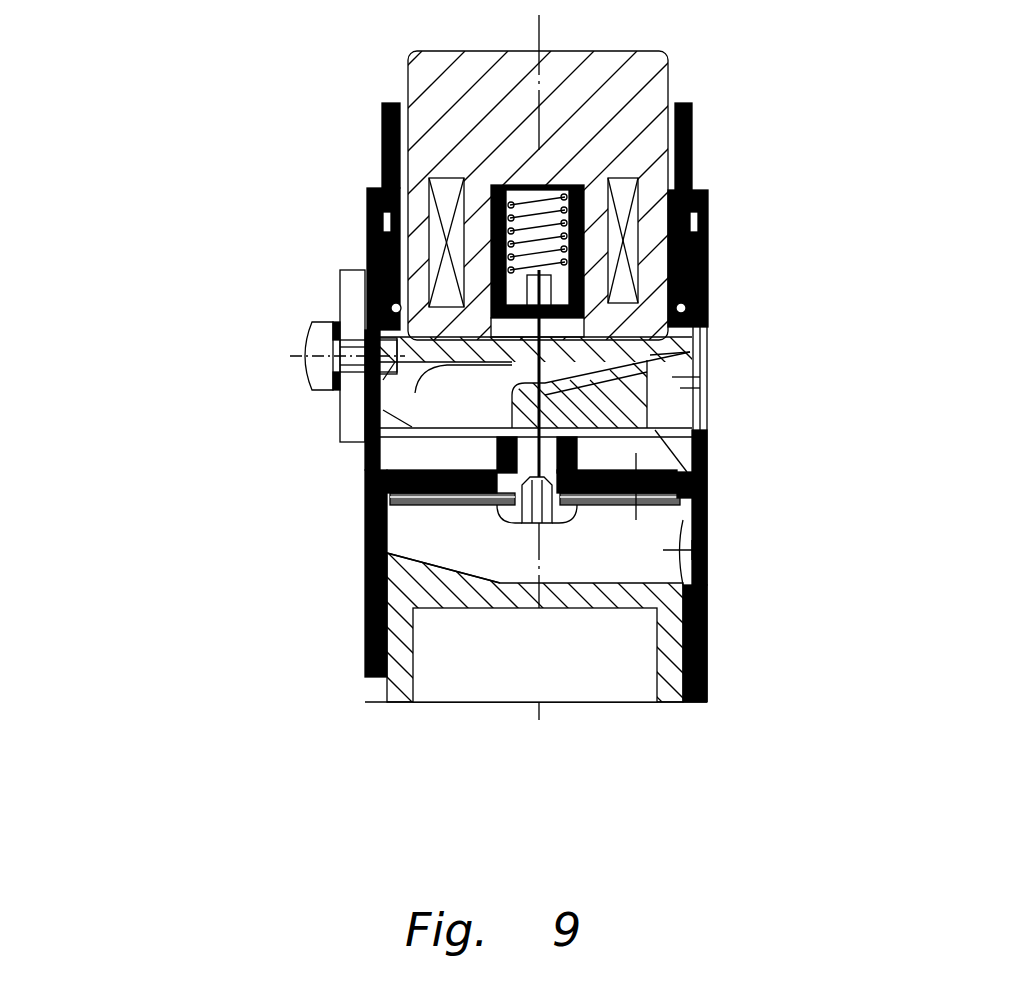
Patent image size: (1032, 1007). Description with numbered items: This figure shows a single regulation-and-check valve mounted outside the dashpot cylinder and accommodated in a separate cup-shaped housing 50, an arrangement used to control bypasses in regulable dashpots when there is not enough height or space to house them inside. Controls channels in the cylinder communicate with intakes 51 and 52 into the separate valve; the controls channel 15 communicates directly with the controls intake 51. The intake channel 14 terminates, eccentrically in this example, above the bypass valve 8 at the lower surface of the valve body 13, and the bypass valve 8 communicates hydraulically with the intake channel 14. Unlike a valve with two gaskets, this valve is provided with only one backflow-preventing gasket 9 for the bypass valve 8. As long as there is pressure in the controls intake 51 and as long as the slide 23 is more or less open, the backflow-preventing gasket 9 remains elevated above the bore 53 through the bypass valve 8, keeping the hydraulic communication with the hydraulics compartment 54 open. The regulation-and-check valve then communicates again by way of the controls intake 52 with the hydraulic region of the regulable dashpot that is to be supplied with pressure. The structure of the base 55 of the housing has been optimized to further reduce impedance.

The bypass valve 8 is at (385, 482).
The backflow-preventing gasket 9 is at (427, 508).
The valve body 13 is at (372, 325).
The intake channel 14 is at (447, 390).
The controls channel 15 is at (620, 377).
The slide 23 is at (548, 392).
The cup-shaped housing 50 is at (707, 640).
The controls intake 51 is at (680, 390).
The controls intake 52 is at (688, 560).
The bore 53 is at (707, 483).
The hydraulics compartment 54 is at (463, 538).
The base 55 is at (500, 583).